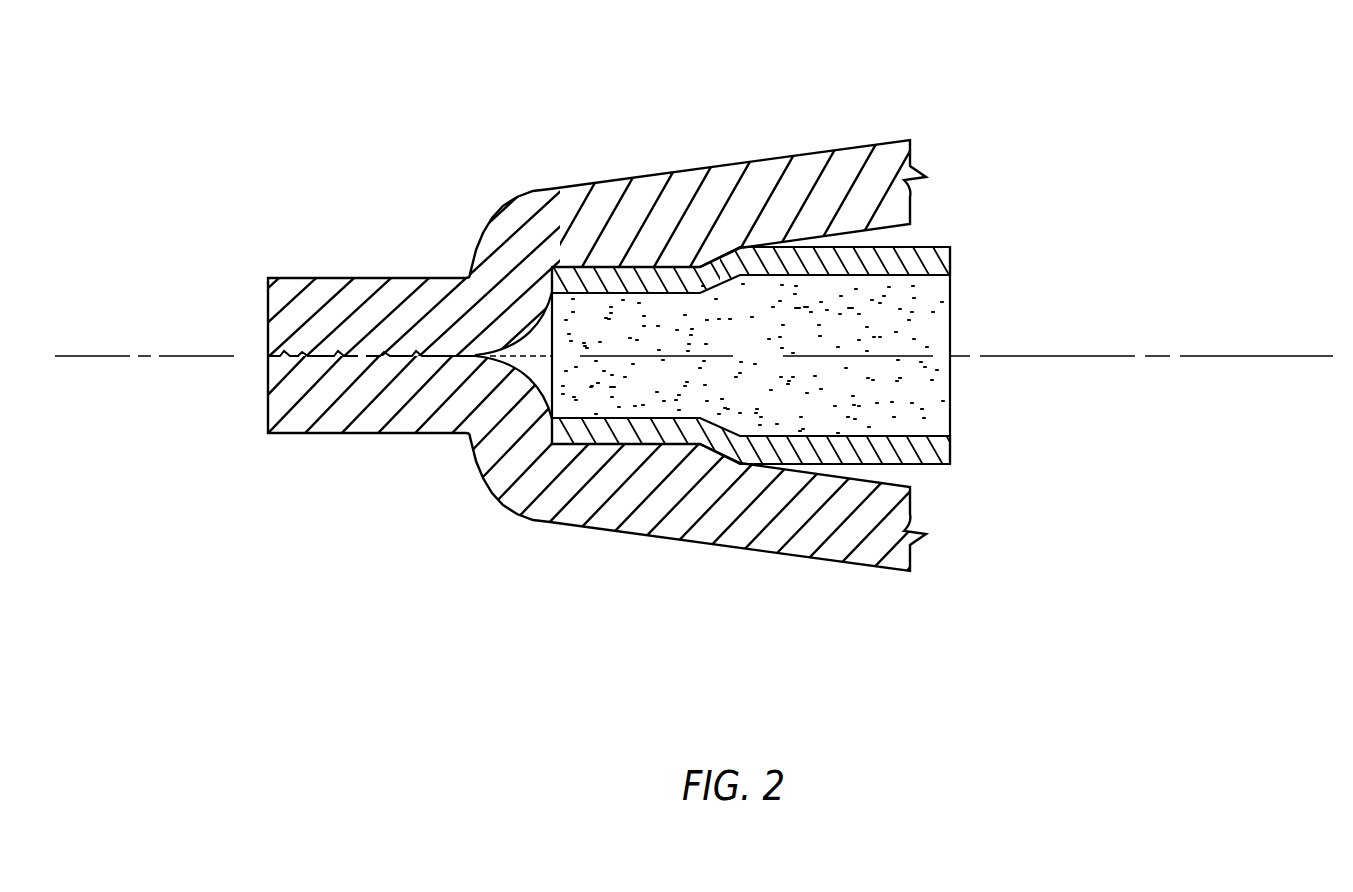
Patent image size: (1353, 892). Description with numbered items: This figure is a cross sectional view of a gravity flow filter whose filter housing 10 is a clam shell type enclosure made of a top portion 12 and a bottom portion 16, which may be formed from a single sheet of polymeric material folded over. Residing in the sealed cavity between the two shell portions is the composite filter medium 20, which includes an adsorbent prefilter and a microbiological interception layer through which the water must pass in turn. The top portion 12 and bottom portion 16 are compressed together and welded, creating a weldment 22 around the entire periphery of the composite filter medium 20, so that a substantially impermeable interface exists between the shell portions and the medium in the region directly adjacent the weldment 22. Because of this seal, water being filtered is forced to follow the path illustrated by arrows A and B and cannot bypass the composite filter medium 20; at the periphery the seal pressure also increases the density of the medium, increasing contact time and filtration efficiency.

The filter housing 10 is at (415, 175).
The top portion 12 is at (765, 170).
The bottom portion 16 is at (547, 505).
The composite filter medium 20 is at (972, 310).
The weldment 22 is at (305, 357).
The arrow A is at (935, 225).
The arrow B is at (930, 478).